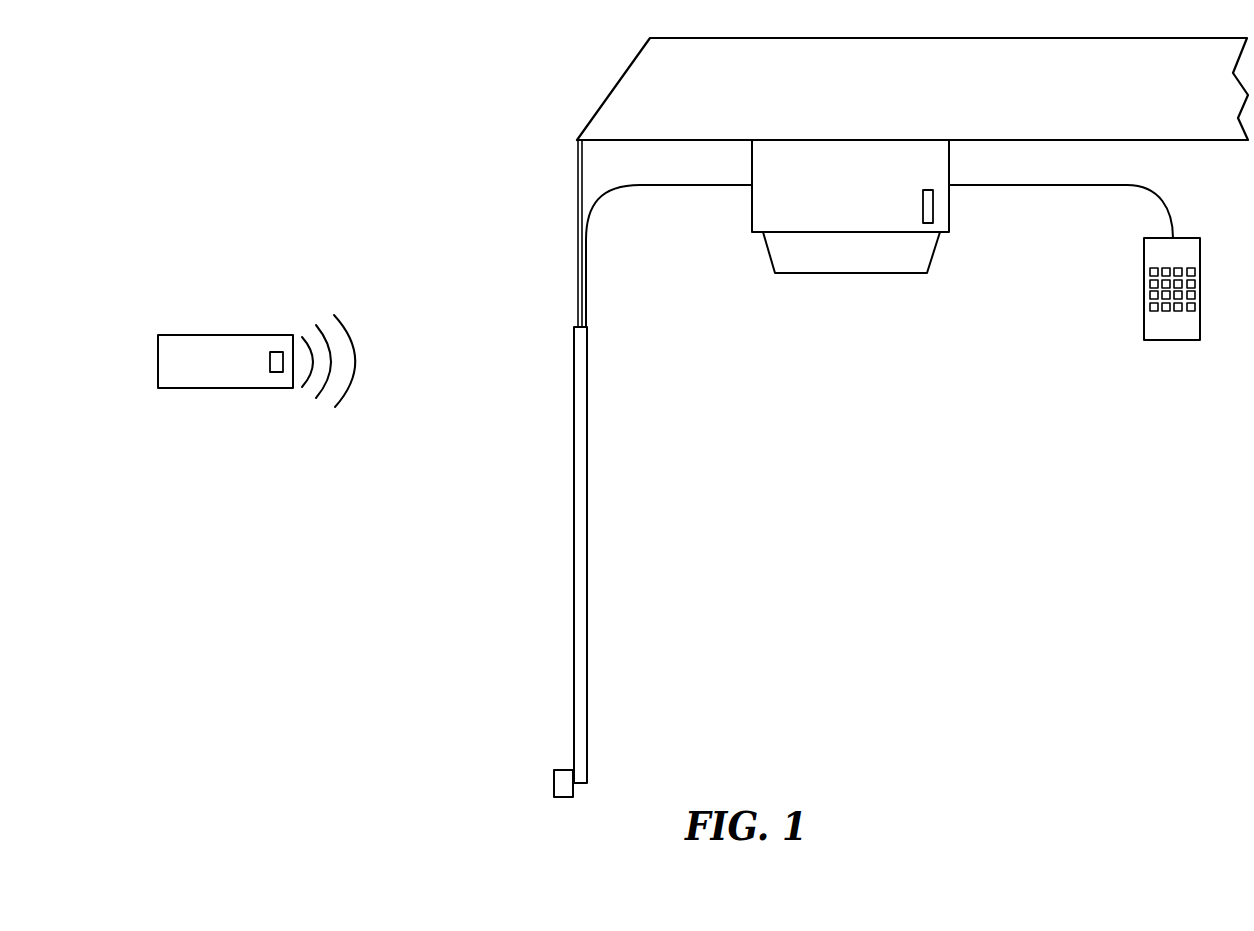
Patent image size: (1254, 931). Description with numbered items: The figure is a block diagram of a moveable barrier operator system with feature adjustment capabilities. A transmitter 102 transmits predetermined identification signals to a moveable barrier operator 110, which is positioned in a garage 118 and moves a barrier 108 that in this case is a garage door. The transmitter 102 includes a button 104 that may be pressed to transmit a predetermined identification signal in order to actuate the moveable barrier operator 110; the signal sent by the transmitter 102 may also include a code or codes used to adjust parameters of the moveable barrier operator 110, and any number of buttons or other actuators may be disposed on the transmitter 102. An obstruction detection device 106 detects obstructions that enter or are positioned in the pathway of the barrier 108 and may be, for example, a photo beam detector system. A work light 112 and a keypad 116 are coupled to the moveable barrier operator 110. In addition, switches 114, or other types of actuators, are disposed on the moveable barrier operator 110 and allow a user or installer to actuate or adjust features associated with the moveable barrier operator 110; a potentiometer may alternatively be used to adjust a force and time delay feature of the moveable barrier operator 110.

The transmitter 102 is at (177, 335).
The button 104 is at (276, 352).
The obstruction detection device 106 is at (554, 782).
The barrier 108 is at (588, 566).
The moveable barrier operator 110 is at (752, 210).
The work light 112 is at (848, 274).
The switches 114 is at (930, 190).
The keypad 116 is at (1188, 238).
The garage 118 is at (605, 99).